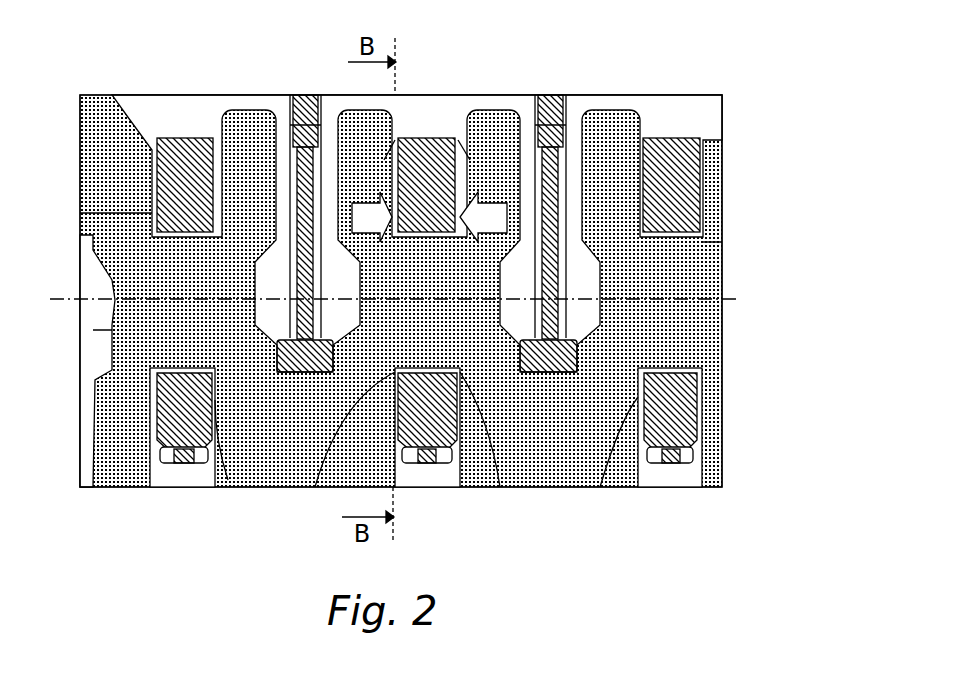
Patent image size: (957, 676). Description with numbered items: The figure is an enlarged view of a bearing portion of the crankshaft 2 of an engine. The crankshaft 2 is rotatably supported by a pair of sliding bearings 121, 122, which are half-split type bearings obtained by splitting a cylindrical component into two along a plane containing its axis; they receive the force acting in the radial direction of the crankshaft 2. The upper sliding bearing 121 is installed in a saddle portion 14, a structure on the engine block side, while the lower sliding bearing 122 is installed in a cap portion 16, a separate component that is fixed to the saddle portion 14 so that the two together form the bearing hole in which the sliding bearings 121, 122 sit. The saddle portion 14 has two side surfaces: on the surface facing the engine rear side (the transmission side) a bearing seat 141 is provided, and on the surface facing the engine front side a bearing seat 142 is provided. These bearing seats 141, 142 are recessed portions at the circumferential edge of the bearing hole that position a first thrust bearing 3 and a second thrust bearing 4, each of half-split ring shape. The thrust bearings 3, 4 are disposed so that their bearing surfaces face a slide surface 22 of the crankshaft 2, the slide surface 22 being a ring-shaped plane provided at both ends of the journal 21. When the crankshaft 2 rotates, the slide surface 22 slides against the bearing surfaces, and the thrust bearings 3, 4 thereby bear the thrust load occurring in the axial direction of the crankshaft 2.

The crankshaft 2 is at (725, 318).
The thrust bearing 3 is at (478, 205).
The thrust bearing 4 is at (400, 140).
The saddle portion 14 is at (185, 140).
The cap portion 16 is at (183, 465).
The journal 21 is at (185, 355).
The slide surface 22 is at (313, 95).
The sliding bearing 121 is at (80, 213).
The sliding bearing 122 is at (150, 375).
The bearing seat 141 is at (522, 150).
The bearing seat 142 is at (363, 200).